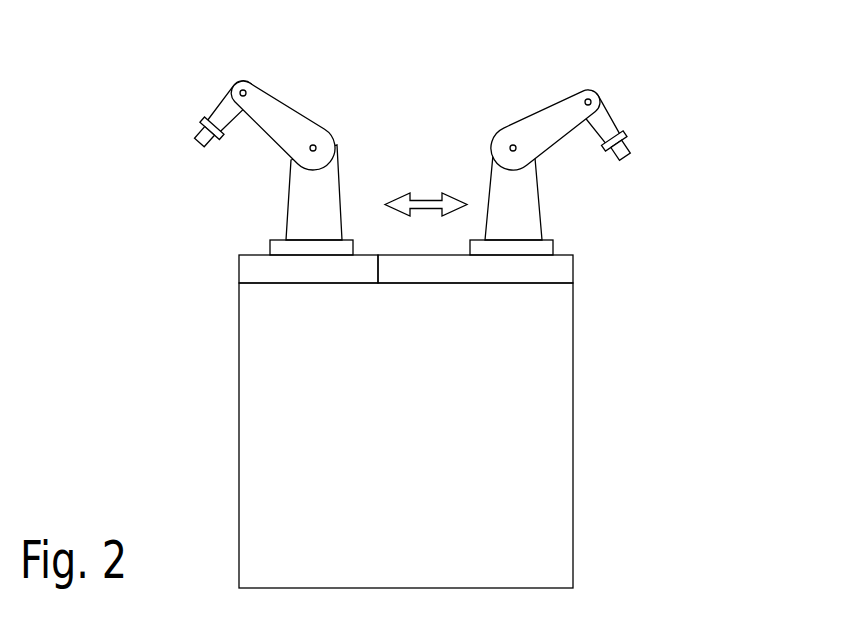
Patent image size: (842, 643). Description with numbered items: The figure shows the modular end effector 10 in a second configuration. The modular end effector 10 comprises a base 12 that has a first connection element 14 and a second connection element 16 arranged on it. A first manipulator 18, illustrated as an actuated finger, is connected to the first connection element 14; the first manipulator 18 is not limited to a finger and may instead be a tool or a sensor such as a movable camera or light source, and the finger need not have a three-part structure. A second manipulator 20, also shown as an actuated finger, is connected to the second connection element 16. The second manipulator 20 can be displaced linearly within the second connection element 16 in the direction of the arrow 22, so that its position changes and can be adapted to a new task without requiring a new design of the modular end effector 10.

The modular end effector 10 is at (717, 152).
The base 12 is at (560, 382).
The first connection element 14 is at (252, 272).
The second connection element 16 is at (588, 258).
The first manipulator 18 is at (228, 110).
The second manipulator 20 is at (603, 127).
The arrow 22 is at (432, 203).